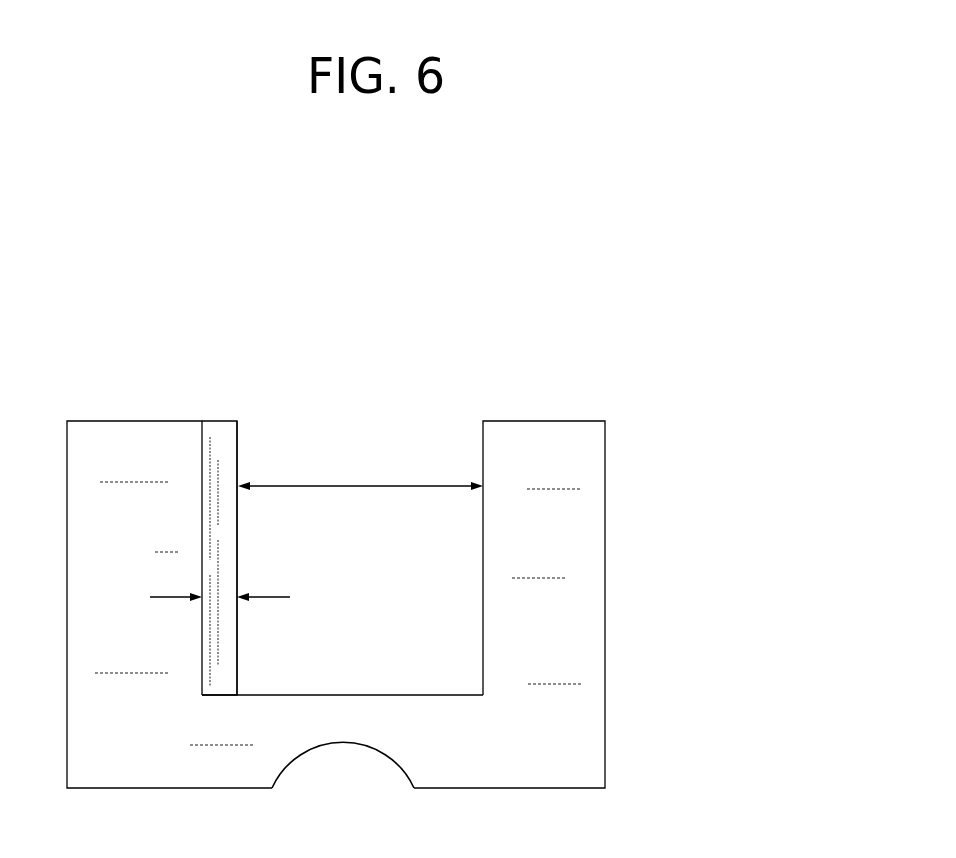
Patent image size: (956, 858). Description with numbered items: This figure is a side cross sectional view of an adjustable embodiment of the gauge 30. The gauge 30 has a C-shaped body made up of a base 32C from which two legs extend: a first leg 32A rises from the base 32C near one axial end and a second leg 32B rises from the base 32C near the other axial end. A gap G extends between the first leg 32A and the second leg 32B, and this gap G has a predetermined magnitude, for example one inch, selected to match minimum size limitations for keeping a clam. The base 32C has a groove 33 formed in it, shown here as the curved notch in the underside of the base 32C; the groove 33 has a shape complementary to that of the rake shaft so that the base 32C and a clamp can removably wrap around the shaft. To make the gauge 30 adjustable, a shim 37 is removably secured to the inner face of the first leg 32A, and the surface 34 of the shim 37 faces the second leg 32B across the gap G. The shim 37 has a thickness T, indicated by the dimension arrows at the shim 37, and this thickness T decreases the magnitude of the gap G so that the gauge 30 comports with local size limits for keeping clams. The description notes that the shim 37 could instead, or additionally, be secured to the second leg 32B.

The gauge 30 is at (520, 350).
The first leg 32A is at (147, 443).
The second leg 32B is at (555, 445).
The base 32C is at (455, 727).
The groove 33 is at (300, 752).
The surface of leg portion 34 is at (238, 537).
The shim 37 is at (218, 437).
The gap G is at (360, 478).
The thickness T is at (163, 597).